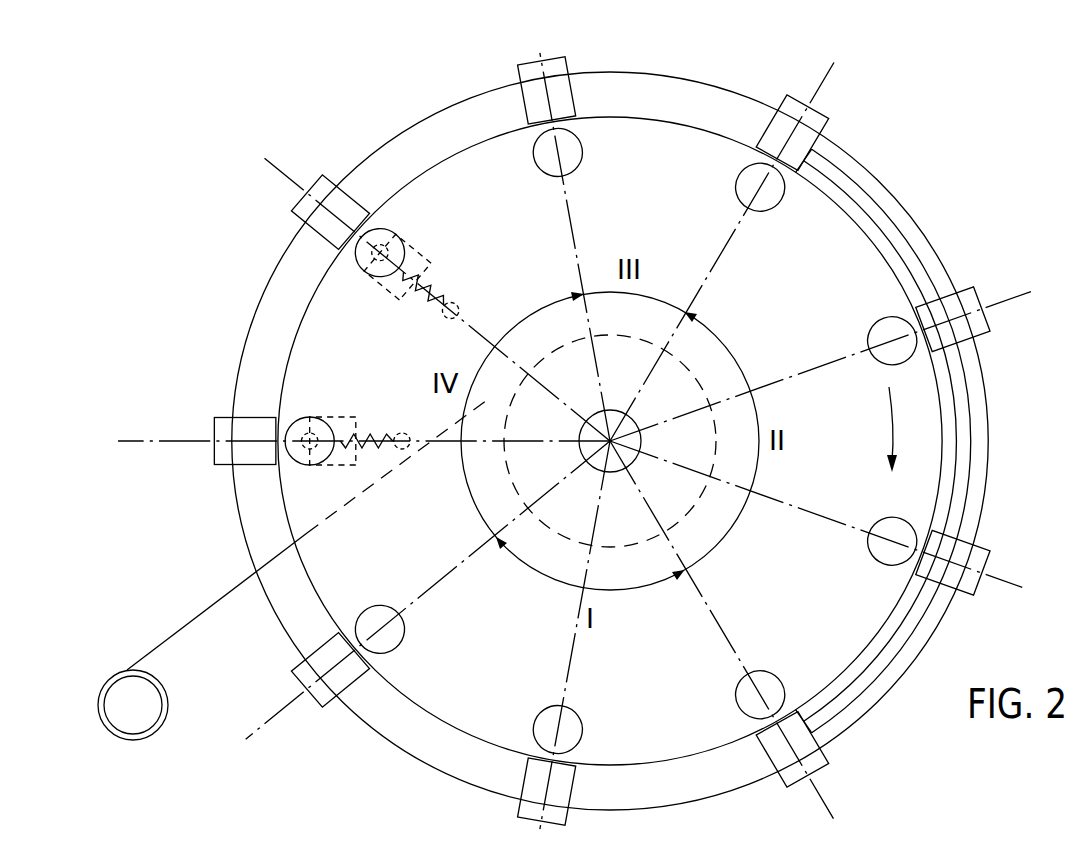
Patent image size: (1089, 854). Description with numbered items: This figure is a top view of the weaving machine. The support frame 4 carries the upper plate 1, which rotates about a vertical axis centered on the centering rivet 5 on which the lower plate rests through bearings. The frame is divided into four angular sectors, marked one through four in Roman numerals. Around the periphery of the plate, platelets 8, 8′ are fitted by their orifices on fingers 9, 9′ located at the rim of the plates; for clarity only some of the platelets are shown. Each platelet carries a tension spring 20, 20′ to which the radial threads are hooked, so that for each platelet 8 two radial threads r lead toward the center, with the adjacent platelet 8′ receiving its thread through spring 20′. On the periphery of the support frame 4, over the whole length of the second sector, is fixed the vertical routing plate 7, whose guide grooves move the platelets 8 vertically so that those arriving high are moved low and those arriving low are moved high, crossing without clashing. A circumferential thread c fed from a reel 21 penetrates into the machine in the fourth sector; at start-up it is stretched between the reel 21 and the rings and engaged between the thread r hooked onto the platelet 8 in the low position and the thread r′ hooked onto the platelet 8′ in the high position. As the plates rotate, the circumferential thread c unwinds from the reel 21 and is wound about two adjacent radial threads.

The upper plate 1 is at (342, 582).
The support frame 4 is at (692, 98).
The centering rivet 5 is at (625, 425).
The routing plate 7 is at (897, 233).
The platelet 8 is at (226, 418).
The platelet 8′ is at (298, 216).
The finger 9 is at (310, 437).
The roller 9′ is at (395, 248).
The tension spring 20 is at (372, 440).
The tension spring 20′ is at (430, 306).
The reel 21 is at (148, 712).
The circumferential thread c is at (180, 627).
The radial thread r is at (443, 444).
The radial thread r′ is at (473, 330).